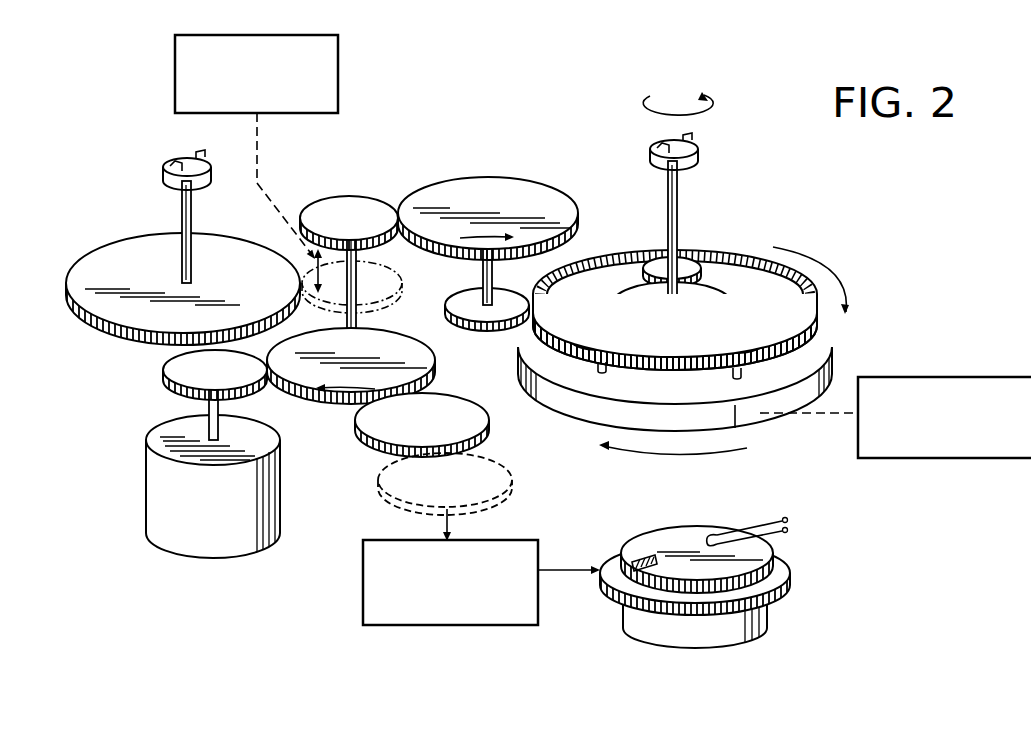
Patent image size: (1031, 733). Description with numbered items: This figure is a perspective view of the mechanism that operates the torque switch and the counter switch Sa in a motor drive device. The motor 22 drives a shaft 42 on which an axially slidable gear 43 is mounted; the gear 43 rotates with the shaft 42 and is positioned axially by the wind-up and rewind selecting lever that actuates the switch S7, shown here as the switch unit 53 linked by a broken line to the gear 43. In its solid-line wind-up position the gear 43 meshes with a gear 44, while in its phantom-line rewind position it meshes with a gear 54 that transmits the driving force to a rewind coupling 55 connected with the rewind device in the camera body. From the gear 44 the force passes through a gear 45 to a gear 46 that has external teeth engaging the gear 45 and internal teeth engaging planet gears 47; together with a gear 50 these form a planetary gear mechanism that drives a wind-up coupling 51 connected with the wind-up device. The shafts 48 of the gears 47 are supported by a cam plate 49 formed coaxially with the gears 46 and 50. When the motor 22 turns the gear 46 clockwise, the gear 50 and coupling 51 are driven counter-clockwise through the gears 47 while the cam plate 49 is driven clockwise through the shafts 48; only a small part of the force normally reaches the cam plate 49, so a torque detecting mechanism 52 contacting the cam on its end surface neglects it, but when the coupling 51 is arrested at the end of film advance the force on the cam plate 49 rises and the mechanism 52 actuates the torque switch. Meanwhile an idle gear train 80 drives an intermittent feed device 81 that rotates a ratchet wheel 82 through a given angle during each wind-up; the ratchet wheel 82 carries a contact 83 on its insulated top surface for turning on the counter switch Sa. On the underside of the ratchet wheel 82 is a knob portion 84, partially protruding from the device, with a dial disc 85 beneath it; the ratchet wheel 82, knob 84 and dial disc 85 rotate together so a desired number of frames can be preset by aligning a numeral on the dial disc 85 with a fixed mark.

The motor 22 is at (170, 547).
The shaft 42 is at (355, 322).
The axially slidable gear 43 is at (338, 200).
The gear 44 is at (497, 180).
The gear 45 is at (475, 314).
The gear 46 is at (620, 253).
The gear 47 is at (686, 268).
The shaft 48 is at (638, 392).
The cam plate 49 is at (613, 412).
The gear 50 is at (713, 292).
The wind-up coupling 51 is at (699, 152).
The torque detecting mechanism 52 is at (980, 377).
The switch S7 53 is at (292, 36).
The gear 54 is at (93, 256).
The rewind coupling 55 is at (166, 176).
The idle gear train 80 is at (373, 490).
The intermittent feed device 81 is at (392, 626).
The ratchet wheel 82 is at (687, 536).
The contact 83 is at (641, 556).
The knob portion 84 is at (790, 578).
The dial disc 85 is at (752, 632).
The counter switch Sa is at (793, 523).